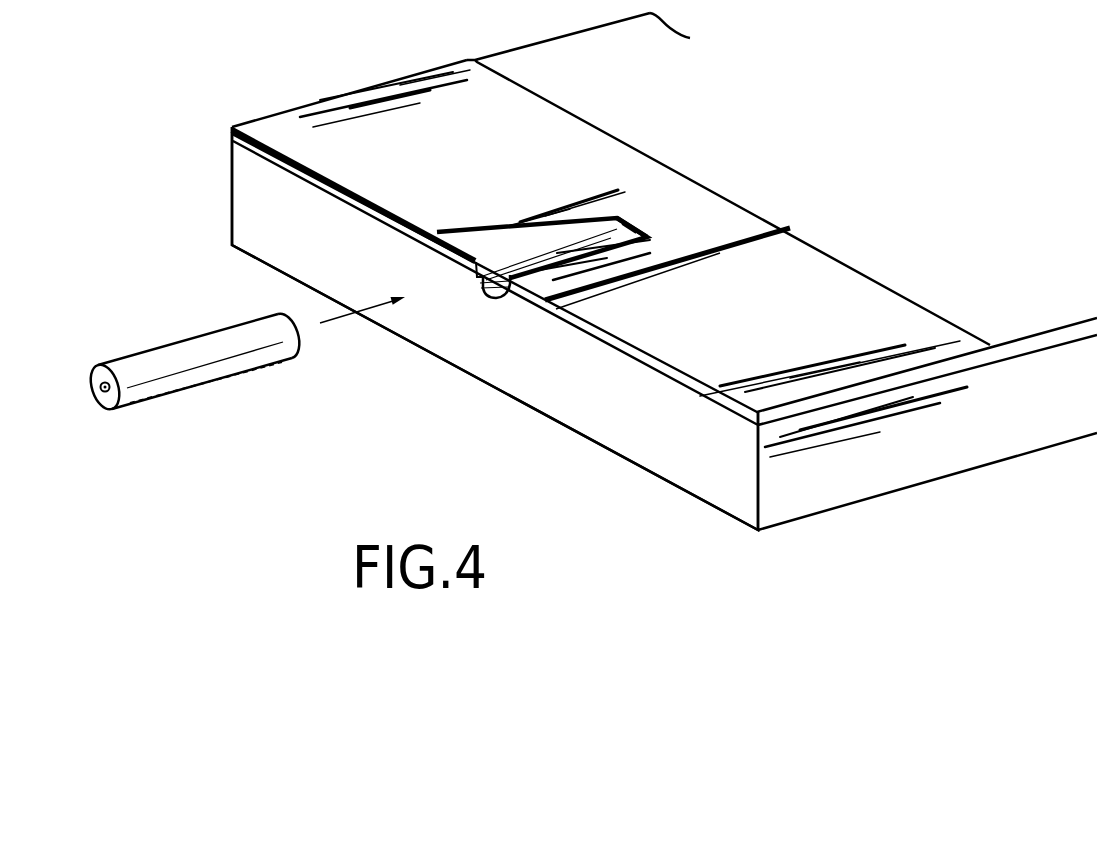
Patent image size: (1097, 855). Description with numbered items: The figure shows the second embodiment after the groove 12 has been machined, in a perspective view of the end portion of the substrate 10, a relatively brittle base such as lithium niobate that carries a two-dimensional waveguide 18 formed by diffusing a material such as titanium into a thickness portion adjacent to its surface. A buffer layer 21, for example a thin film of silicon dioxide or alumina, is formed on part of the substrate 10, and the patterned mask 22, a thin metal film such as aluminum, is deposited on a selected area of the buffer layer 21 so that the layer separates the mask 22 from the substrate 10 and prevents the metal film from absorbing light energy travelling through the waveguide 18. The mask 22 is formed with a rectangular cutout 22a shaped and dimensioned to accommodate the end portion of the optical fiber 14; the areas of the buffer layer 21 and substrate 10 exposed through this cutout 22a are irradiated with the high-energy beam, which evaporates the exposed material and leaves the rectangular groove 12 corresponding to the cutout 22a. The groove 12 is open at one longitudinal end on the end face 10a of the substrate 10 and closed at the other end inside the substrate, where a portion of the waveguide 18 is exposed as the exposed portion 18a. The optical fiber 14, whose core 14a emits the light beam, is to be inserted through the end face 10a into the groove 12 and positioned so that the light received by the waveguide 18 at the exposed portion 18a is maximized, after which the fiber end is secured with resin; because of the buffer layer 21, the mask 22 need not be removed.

The substrate 10 is at (824, 497).
The end face 10a is at (545, 397).
The groove 12 is at (484, 290).
The optical fiber 14 is at (185, 352).
The core 14a is at (103, 408).
The waveguide 18 is at (980, 367).
The exposed portion of the waveguide 18a is at (624, 222).
The buffer layer 21 is at (306, 162).
The patterned mask 22 is at (733, 228).
The cutout 22a is at (510, 250).